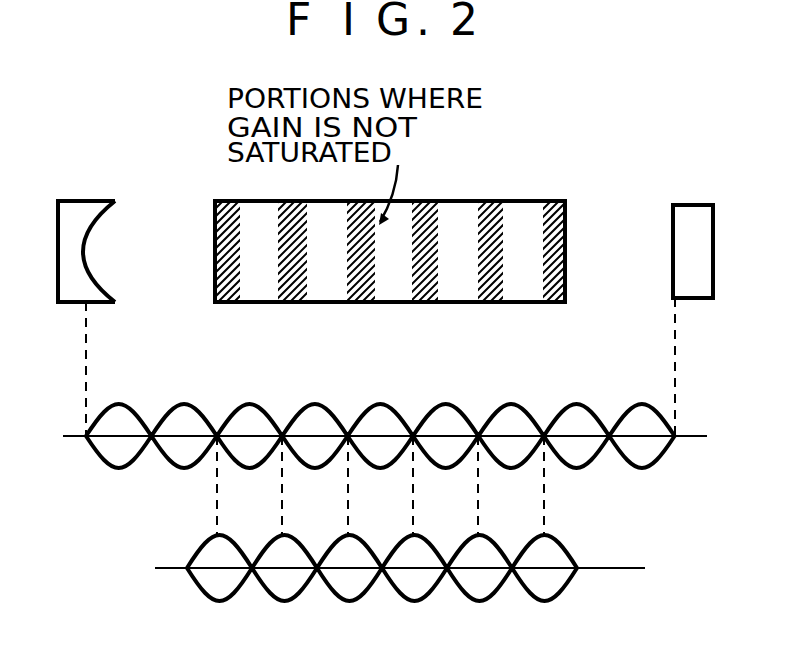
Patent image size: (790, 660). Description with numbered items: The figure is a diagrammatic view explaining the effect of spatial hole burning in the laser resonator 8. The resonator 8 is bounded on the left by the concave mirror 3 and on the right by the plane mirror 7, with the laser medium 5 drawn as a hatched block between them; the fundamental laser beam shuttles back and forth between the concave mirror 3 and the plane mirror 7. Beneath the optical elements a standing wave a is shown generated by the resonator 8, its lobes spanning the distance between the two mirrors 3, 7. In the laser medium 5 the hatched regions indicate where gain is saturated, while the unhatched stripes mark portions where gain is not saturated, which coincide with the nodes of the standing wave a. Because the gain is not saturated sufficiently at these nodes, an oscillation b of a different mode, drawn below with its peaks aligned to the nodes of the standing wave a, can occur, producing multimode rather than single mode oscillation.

The concave mirror 3 is at (79, 210).
The laser medium 5 is at (507, 200).
The plane mirror 7 is at (690, 205).
The laser resonator 8 is at (531, 160).
The standing wave a is at (178, 408).
The oscillation of a different mode b is at (212, 600).